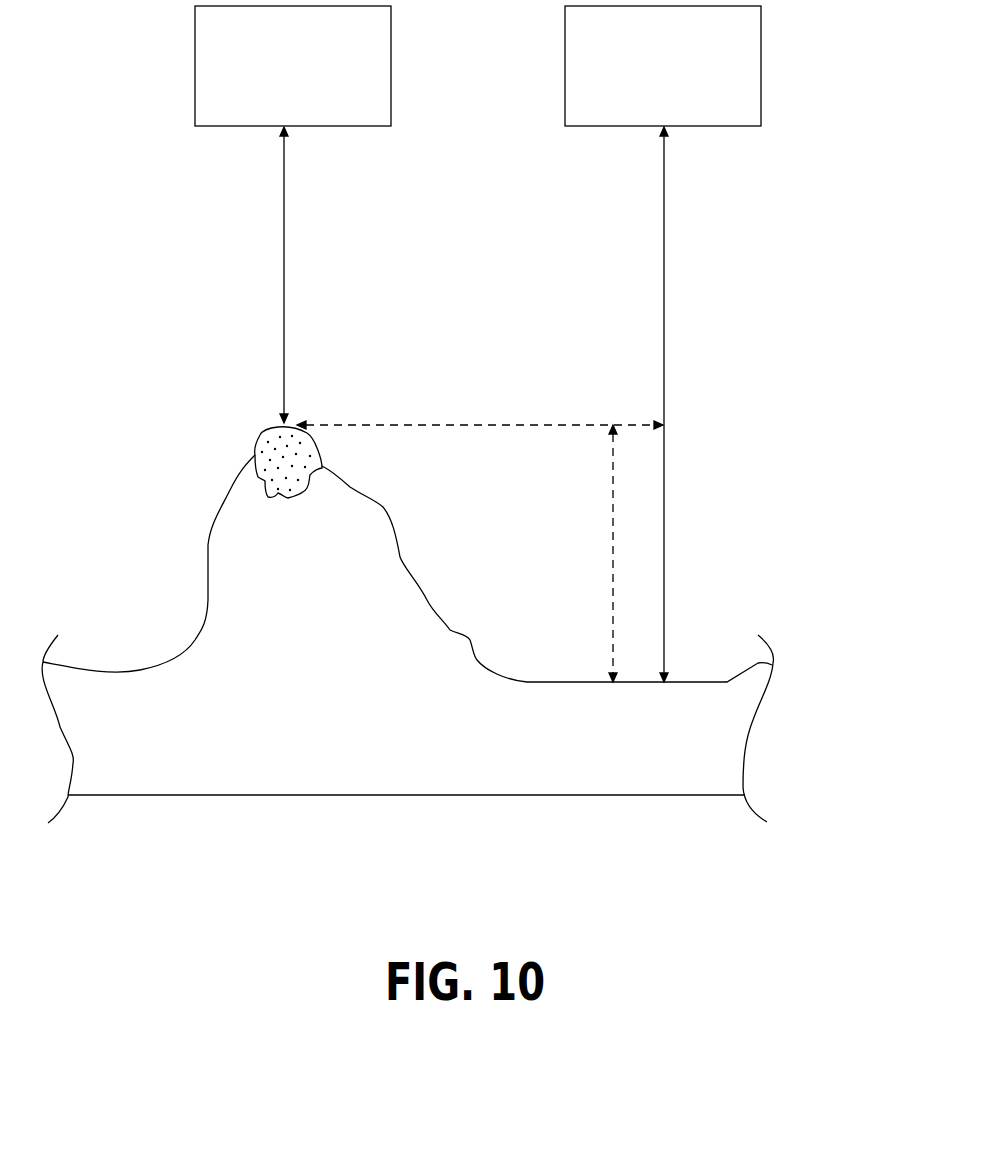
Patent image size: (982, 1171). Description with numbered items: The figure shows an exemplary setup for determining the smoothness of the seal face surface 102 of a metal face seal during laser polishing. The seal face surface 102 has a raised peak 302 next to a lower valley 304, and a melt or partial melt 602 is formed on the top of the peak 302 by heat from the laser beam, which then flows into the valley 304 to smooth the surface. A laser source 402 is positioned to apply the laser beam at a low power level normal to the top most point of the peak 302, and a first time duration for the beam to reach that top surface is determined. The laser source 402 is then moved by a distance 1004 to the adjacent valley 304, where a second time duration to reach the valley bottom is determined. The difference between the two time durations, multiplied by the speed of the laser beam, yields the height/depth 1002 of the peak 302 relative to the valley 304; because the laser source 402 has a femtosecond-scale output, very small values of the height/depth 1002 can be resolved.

The seal face surface 102 is at (720, 762).
The peak 302 is at (271, 427).
The valley 304 is at (713, 680).
The laser source 402 is at (273, 89).
The melt or partial melt 602 is at (258, 447).
The height/depth 1002 is at (612, 552).
The distance 1004 is at (457, 425).